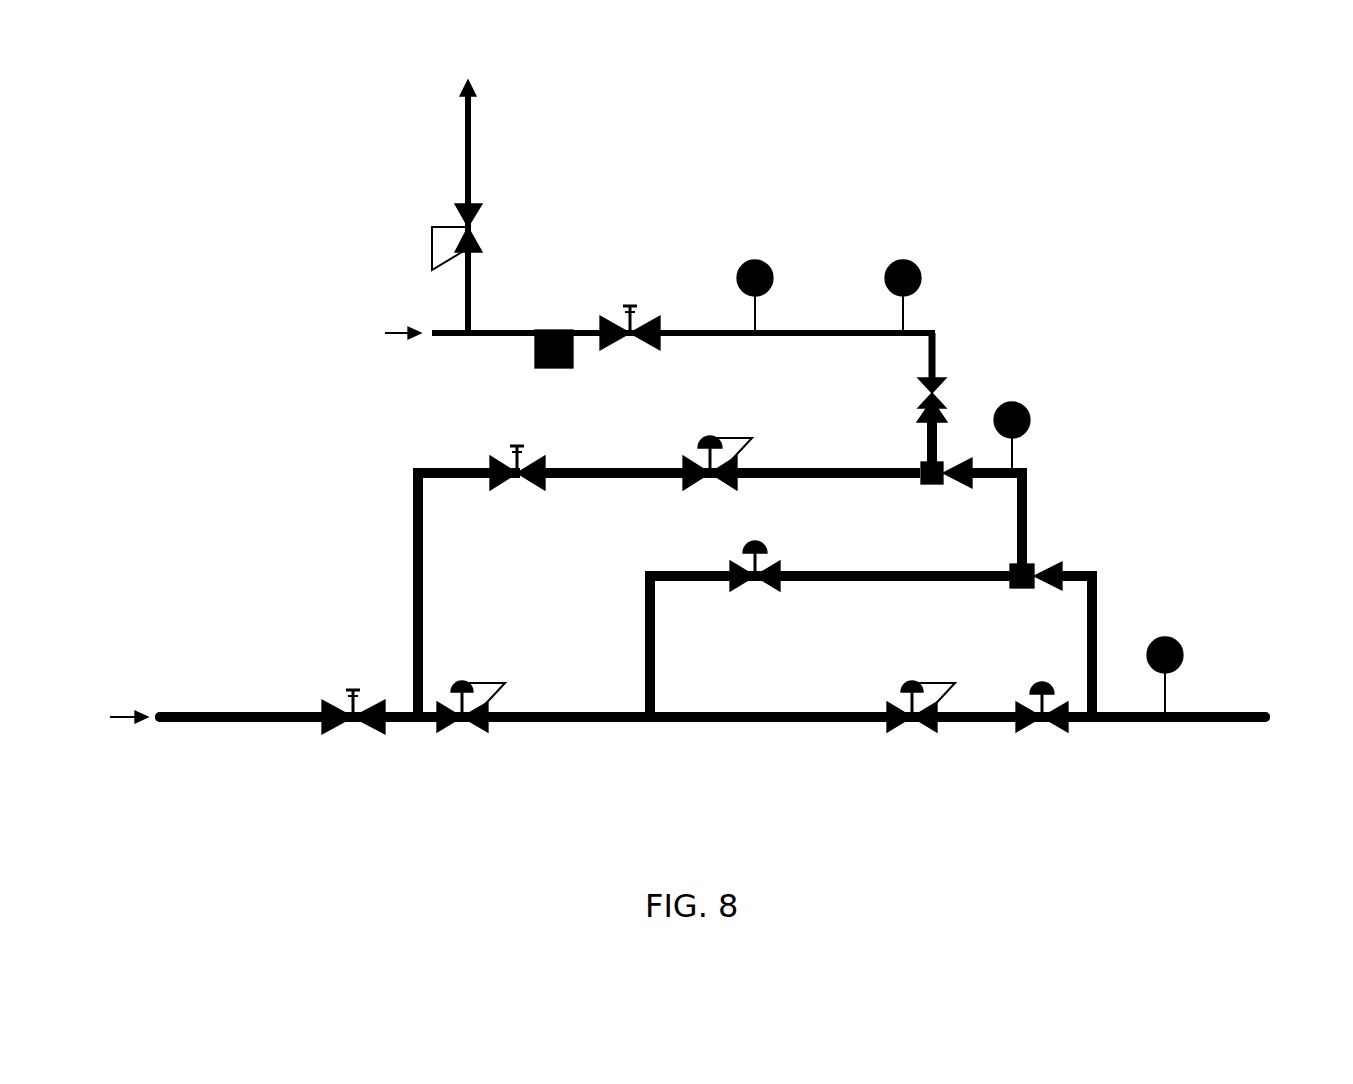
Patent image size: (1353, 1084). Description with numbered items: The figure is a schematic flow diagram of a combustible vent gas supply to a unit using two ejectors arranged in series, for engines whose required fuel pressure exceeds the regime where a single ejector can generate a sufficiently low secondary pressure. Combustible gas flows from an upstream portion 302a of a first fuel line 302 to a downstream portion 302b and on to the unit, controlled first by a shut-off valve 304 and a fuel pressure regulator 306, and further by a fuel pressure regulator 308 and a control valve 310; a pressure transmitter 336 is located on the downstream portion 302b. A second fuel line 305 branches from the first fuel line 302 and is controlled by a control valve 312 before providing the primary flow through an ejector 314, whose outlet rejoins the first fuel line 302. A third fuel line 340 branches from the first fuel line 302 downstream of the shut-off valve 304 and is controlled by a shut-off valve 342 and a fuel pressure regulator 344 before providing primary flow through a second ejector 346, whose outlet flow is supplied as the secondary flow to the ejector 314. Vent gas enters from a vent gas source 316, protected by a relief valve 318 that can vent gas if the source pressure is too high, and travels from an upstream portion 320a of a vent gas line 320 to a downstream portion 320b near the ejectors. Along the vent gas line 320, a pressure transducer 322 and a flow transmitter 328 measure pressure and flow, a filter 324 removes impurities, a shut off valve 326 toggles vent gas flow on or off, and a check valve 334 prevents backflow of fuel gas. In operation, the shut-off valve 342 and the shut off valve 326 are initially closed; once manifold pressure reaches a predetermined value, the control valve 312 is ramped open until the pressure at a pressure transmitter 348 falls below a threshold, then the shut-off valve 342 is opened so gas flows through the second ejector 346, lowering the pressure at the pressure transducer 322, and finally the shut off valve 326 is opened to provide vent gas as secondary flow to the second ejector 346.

The first fuel line 302 is at (540, 740).
The upstream portion of the first fuel line 302a is at (165, 690).
The downstream portion of the first fuel line 302b is at (1232, 730).
The shut-off valve 304 is at (343, 668).
The second fuel line 305 is at (622, 600).
The fuel pressure regulator 306 is at (479, 678).
The fuel pressure regulator 308 is at (896, 673).
The control valve 310 is at (1026, 673).
The control valve 312 is at (738, 552).
The ejector 314 is at (1040, 558).
The vent gas source 316 is at (420, 314).
The relief valve 318 is at (476, 205).
The vent gas line 320 is at (850, 320).
The upstream portion of the vent gas line 320a is at (447, 341).
The downstream portion of the vent gas line 320b is at (920, 443).
The pressure transducer 322 is at (770, 266).
The filter 324 is at (528, 374).
The shut off valve 326 is at (620, 352).
The flow transmitter 328 is at (917, 267).
The check valve 334 is at (938, 383).
The pressure transmitter 336 is at (1176, 634).
The third fuel line 340 is at (404, 505).
The shut-off valve 342 is at (514, 494).
The fuel pressure regulator 344 is at (727, 437).
The second ejector 346 is at (925, 490).
The pressure transmitter 348 is at (1026, 404).